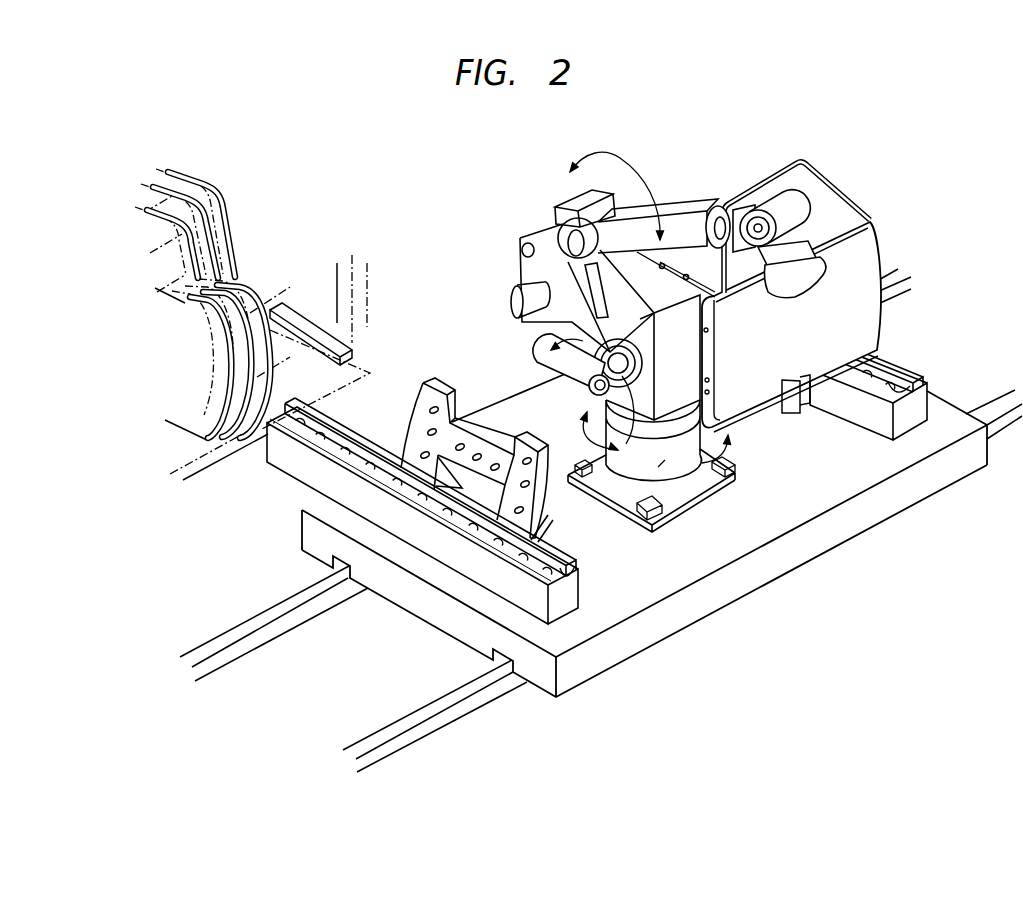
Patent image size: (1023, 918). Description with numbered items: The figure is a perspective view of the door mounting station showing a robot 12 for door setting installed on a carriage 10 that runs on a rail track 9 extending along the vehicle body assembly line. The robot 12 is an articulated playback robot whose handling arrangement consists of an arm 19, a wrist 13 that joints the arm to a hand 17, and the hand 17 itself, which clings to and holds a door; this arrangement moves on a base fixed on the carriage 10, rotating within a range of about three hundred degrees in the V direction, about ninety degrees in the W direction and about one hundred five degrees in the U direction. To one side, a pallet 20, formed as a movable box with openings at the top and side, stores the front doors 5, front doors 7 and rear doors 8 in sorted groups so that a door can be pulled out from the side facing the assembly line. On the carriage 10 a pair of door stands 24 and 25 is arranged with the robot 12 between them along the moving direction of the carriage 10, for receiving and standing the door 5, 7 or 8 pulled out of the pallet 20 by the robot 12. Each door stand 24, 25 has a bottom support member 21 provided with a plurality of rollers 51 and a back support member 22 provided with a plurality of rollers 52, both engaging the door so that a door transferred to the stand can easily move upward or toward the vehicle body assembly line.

The front door 5 is at (221, 358).
The front door 7 is at (185, 223).
The rear door 8 is at (508, 312).
The rail track 9 is at (240, 632).
The carriage 10 is at (702, 600).
The robot 12 is at (699, 319).
The wrist 13 is at (810, 238).
The hand 17 is at (805, 290).
The arm 19 is at (682, 210).
The pallet 20 is at (232, 466).
The bottom support member 21 is at (880, 417).
The back support member 22 is at (497, 450).
The door stand 24 is at (893, 357).
The door stand 25 is at (445, 538).
The roller 51 is at (902, 394).
The roller 52 is at (527, 492).